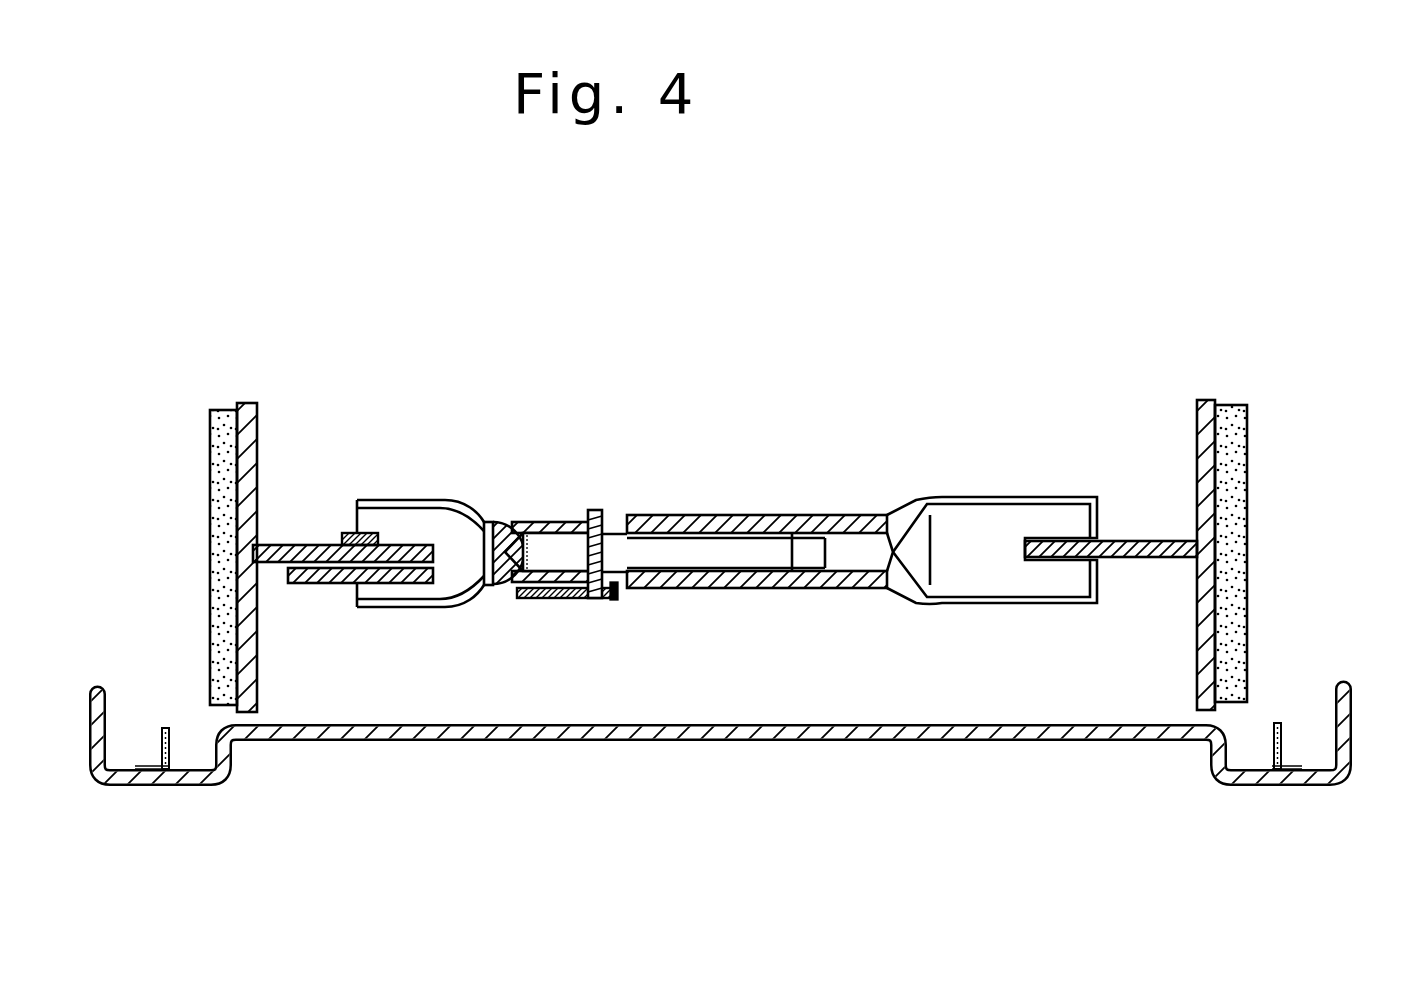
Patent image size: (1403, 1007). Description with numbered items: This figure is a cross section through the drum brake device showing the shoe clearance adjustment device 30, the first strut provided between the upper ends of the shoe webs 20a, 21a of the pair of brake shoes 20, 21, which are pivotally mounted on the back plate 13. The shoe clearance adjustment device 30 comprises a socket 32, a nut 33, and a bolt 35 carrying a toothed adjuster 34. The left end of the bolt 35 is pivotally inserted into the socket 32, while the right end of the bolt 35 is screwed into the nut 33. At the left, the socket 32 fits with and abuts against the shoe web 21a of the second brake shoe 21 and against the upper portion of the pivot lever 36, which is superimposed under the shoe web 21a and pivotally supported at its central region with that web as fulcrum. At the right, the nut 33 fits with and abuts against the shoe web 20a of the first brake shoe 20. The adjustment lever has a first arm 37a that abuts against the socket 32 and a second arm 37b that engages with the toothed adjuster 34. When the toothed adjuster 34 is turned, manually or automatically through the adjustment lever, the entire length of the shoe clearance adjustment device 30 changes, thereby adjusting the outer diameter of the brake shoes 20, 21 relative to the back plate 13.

The back plate 13 is at (710, 746).
The first brake shoe 20 is at (1258, 518).
The shoe web of first brake shoe 20a is at (1143, 540).
The second brake shoe 21 is at (200, 542).
The shoe web of second brake shoe 21a is at (287, 543).
The shoe clearance adjustment device 30 is at (727, 512).
The socket 32 is at (537, 520).
The nut 33 is at (850, 513).
The toothed adjuster 34 is at (595, 510).
The bolt 35 is at (668, 545).
The pivot lever 36 is at (330, 584).
The first arm of adjustment lever 37a is at (342, 532).
The second arm of adjustment lever 37b is at (537, 599).